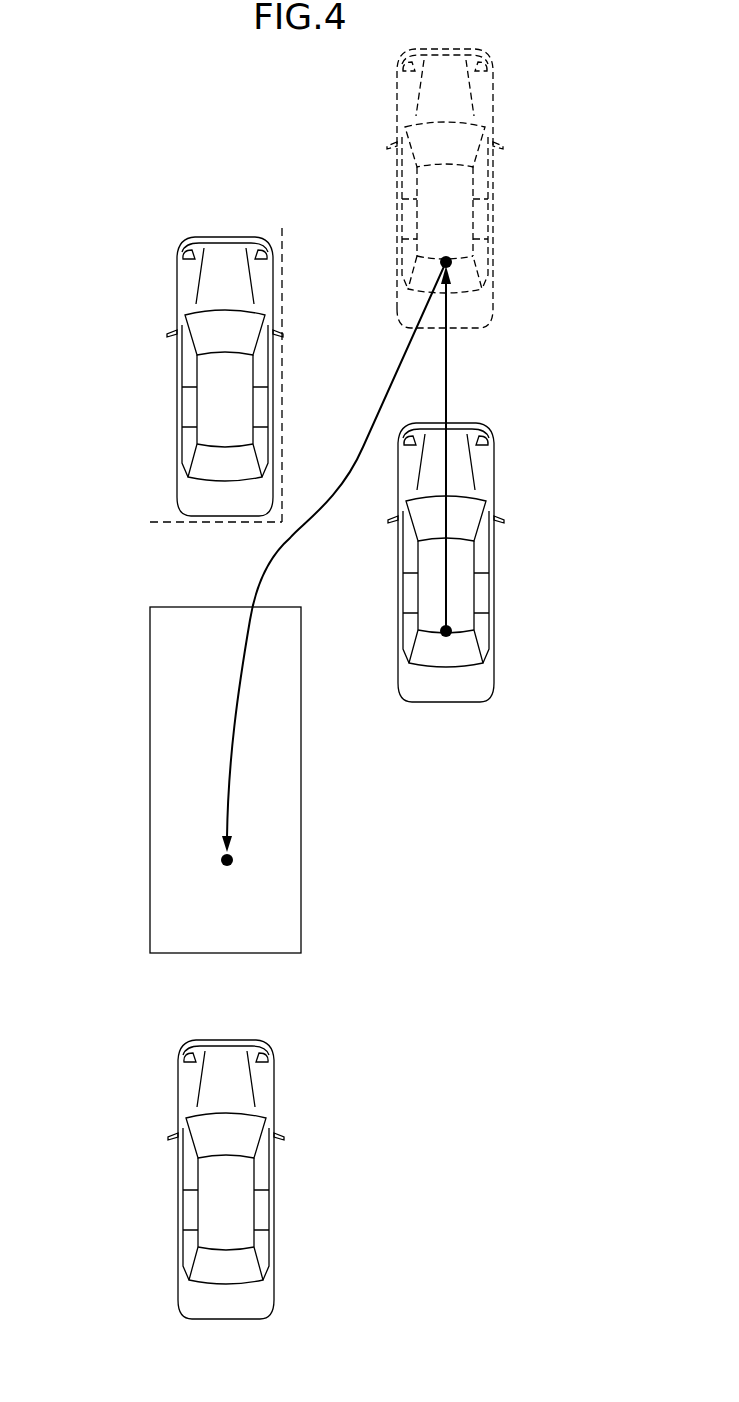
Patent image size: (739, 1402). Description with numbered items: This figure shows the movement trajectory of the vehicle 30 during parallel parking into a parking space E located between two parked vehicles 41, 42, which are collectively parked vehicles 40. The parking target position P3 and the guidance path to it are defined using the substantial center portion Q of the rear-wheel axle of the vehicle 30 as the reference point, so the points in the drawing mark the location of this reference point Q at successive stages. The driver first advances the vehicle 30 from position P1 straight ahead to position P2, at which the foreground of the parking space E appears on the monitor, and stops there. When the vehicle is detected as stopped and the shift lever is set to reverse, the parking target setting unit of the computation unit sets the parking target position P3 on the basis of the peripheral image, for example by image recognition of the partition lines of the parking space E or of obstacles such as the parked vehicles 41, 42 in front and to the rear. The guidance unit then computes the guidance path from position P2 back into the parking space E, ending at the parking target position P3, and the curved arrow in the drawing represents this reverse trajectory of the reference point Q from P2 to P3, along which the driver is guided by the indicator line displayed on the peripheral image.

The vehicle 30 is at (490, 92).
The parked vehicle 40 is at (172, 778).
The parked vehicle 41 is at (178, 375).
The parked vehicle 42 is at (178, 1179).
The parking space E is at (150, 757).
The substantial center portion of the rear wheel axle Q is at (392, 571).
The position P1 is at (446, 633).
The position P2 is at (447, 258).
The parking target position P3 is at (227, 867).